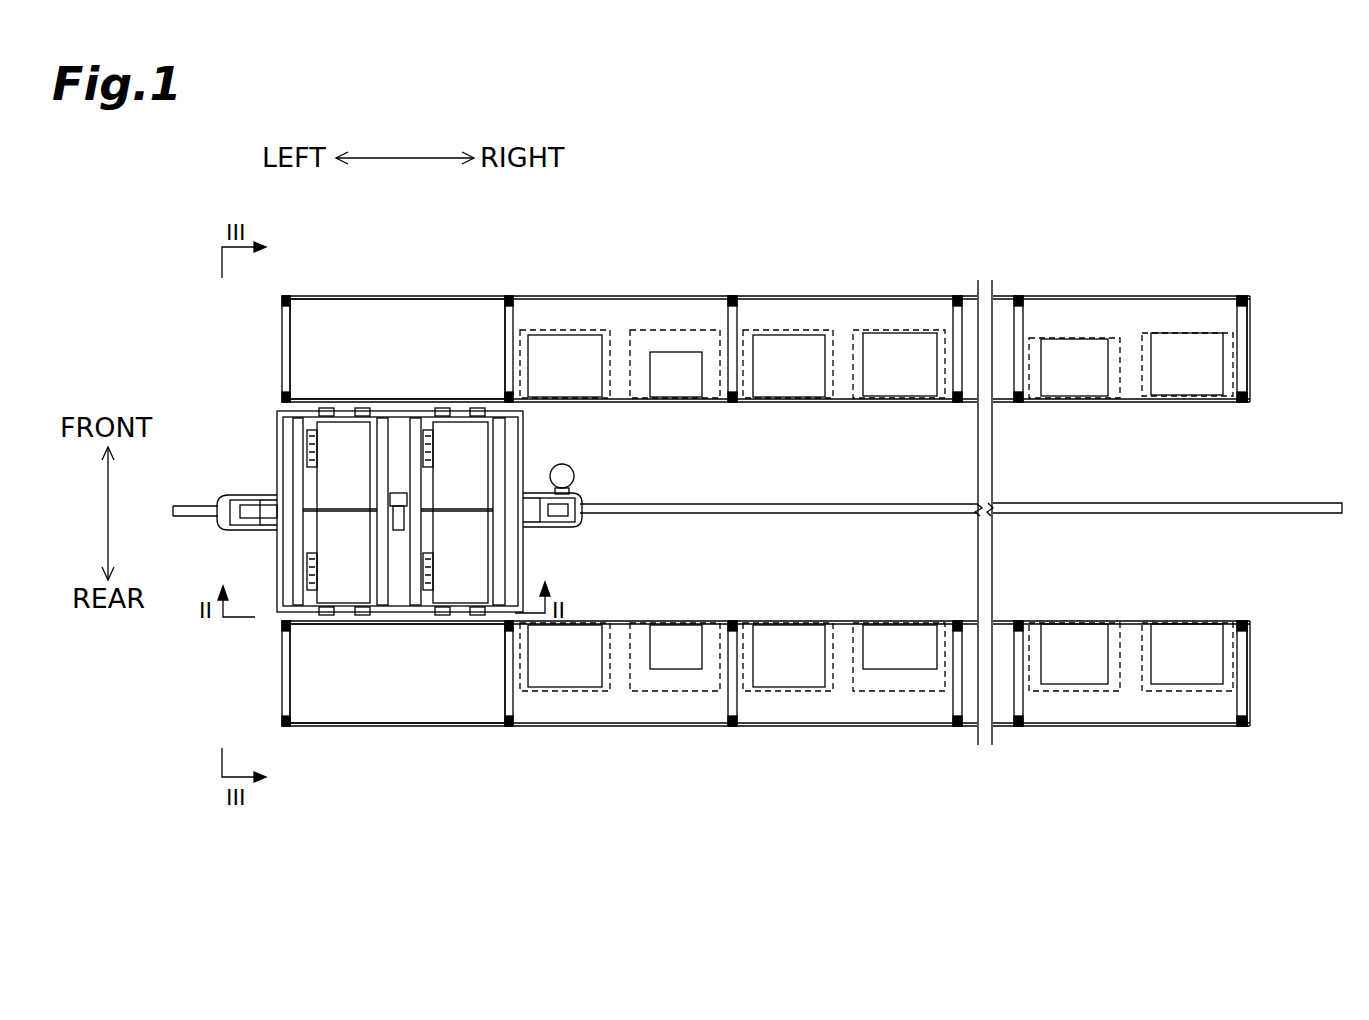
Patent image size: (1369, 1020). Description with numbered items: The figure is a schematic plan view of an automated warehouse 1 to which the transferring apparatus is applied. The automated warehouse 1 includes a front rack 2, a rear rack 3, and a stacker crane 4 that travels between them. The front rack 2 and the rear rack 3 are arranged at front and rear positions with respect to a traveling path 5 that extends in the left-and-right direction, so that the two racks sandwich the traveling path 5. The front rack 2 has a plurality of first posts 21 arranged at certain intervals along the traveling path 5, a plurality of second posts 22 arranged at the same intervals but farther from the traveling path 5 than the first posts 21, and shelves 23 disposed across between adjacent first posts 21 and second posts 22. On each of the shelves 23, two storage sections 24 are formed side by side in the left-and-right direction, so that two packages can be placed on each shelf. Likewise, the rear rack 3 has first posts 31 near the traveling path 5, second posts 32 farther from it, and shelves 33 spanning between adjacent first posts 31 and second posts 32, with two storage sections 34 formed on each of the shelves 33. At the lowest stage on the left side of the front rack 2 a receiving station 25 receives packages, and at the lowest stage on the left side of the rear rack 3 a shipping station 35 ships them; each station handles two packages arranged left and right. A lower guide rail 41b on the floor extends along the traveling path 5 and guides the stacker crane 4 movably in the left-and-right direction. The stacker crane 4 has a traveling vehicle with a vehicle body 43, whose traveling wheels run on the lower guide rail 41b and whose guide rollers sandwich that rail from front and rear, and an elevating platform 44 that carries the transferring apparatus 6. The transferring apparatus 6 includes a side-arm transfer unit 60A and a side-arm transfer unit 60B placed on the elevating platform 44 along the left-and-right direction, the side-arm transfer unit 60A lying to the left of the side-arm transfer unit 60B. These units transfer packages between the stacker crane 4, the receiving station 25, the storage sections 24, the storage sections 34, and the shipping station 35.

The automated warehouse 1 is at (1050, 182).
The front rack 2 is at (890, 298).
The rear rack 3 is at (840, 740).
The stacker crane 4 is at (578, 461).
The traveling path 5 is at (1283, 503).
The transferring apparatus 6 is at (508, 568).
The first posts 21 is at (282, 398).
The second posts 22 is at (282, 298).
The shelves 23 is at (621, 296).
The storage sections 24 is at (562, 330).
The receiving station 25 is at (406, 318).
The first posts 31 is at (282, 625).
The second posts 32 is at (282, 722).
The shelves 33 is at (624, 706).
The storage sections 34 is at (576, 692).
The shipping station 35 is at (402, 705).
The lower guide rail 41b is at (862, 515).
The vehicle body 43 is at (257, 530).
The elevating platform 44 is at (512, 548).
The side-arm transfer unit 60A is at (290, 452).
The side-arm transfer unit 60B is at (506, 459).